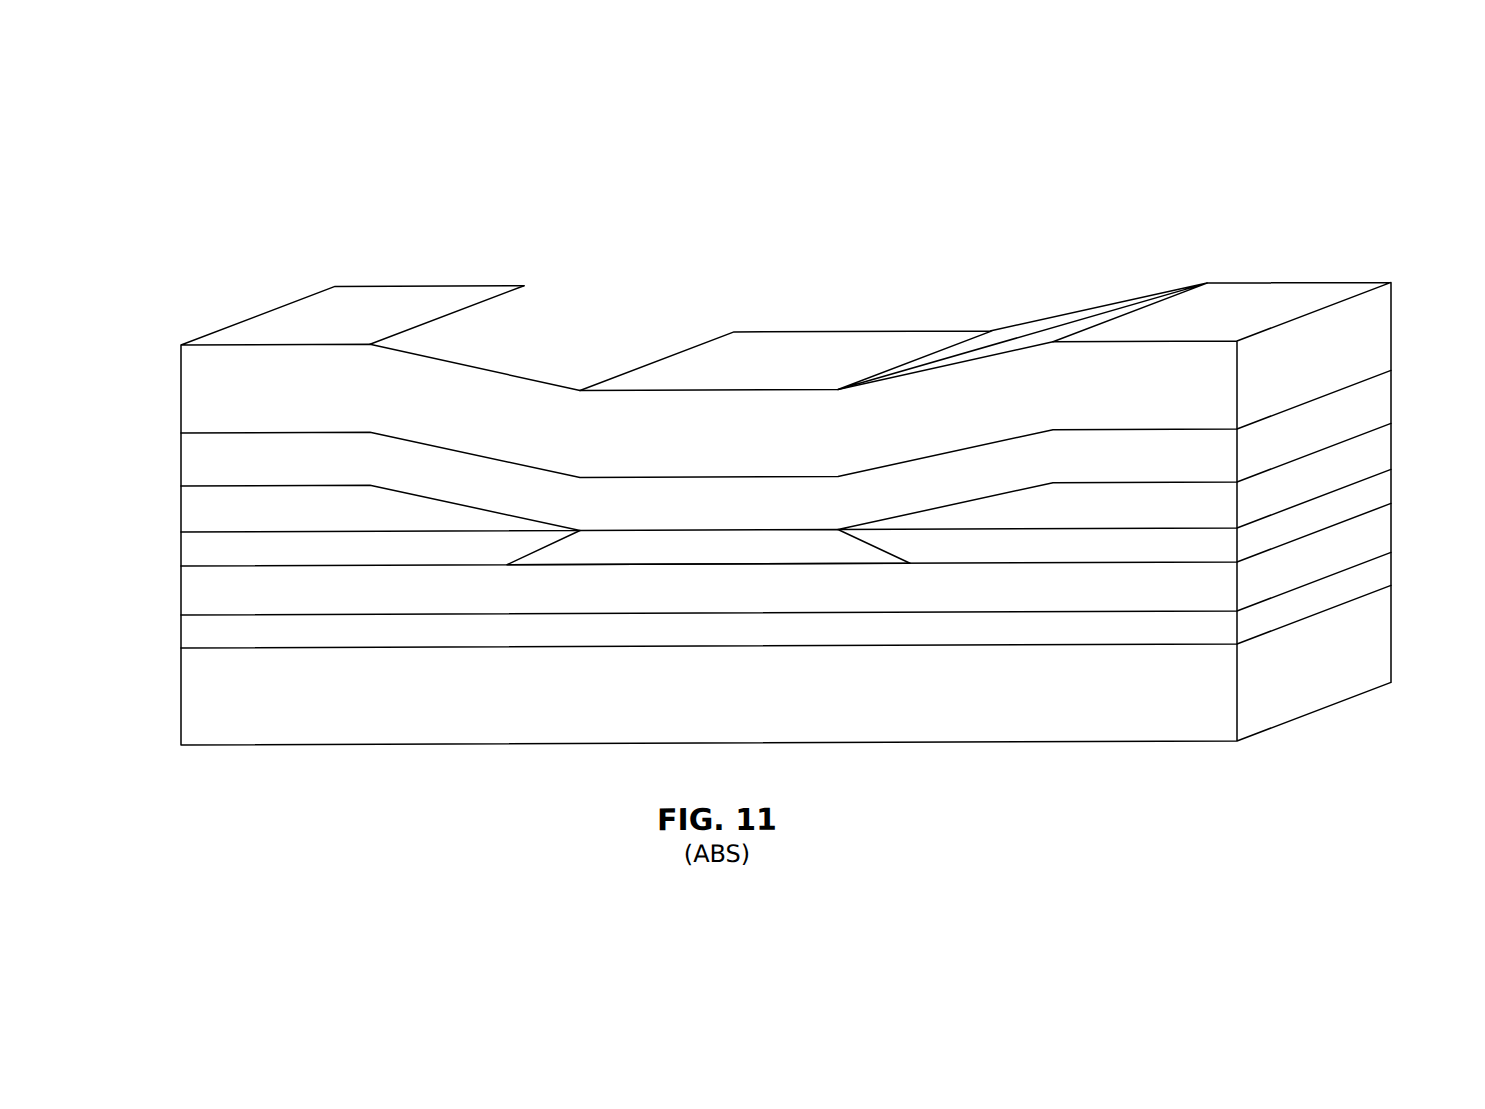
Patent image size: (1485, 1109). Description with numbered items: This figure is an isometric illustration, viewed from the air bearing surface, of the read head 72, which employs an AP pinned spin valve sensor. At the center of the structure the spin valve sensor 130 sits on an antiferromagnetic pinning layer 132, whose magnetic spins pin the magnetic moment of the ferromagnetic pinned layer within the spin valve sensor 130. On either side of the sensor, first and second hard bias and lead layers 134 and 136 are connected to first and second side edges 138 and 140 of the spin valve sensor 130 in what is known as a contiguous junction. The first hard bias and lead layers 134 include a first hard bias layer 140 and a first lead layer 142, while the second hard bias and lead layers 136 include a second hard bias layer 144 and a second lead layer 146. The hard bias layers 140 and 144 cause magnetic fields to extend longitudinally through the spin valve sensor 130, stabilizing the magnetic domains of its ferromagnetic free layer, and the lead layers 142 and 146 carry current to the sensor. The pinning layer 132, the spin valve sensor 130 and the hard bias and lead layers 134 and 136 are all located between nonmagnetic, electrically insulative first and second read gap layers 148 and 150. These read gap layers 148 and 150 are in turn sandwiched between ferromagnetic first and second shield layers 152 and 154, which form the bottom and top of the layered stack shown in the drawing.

The read head 72 is at (862, 306).
The spin valve sensor 130 is at (617, 530).
The antiferromagnetic pinning layer 132 is at (908, 595).
The first hard bias and lead layers 134 is at (172, 485).
The second hard bias and lead layers 136 is at (1405, 427).
The first side edge 138 is at (530, 556).
The first hard bias layer 140 is at (225, 550).
The first lead layer 142 is at (225, 497).
The second hard bias layer 144 is at (1183, 551).
The second lead layer 146 is at (1183, 499).
The first read gap layer 148 is at (477, 638).
The second read gap layer 150 is at (435, 466).
The first shield layer 152 is at (358, 724).
The second shield layer 154 is at (635, 323).